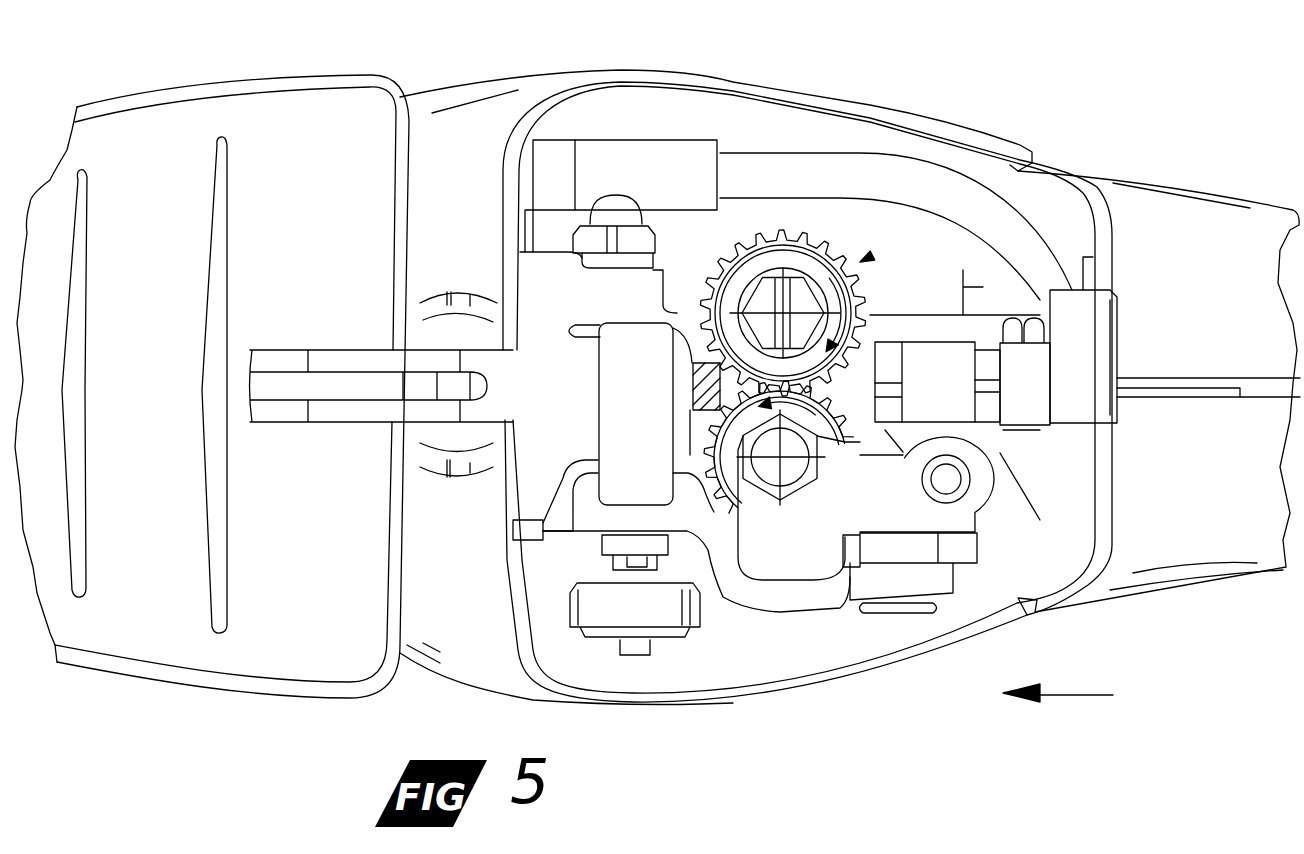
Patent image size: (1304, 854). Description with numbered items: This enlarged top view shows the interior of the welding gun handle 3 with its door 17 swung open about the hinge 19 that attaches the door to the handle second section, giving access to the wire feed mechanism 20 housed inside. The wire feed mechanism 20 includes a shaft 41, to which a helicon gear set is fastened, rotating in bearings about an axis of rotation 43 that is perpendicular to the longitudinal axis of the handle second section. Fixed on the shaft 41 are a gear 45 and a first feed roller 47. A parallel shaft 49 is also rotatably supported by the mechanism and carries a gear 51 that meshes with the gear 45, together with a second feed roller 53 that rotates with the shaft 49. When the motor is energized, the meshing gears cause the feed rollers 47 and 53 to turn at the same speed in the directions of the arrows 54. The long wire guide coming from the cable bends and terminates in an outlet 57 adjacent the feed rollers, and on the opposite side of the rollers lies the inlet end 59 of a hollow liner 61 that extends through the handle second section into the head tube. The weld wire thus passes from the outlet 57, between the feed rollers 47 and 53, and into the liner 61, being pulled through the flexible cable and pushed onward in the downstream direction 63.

The handle 3 is at (1203, 187).
The door 17 is at (283, 110).
The hinge 19 is at (463, 383).
The wire feed mechanism 20 is at (868, 258).
The shaft 41 is at (805, 293).
The axis of rotation 43 is at (757, 280).
The gear 45 is at (847, 253).
The first feed roller 47 is at (760, 252).
The shaft 49 is at (790, 473).
The gear 51 is at (727, 527).
The second feed roller 53 is at (828, 450).
The arrows 54 is at (848, 292).
The outlet 57 is at (890, 387).
The inlet end 59 is at (715, 380).
The hollow liner 61 is at (703, 397).
The downstream direction 63 is at (1068, 693).